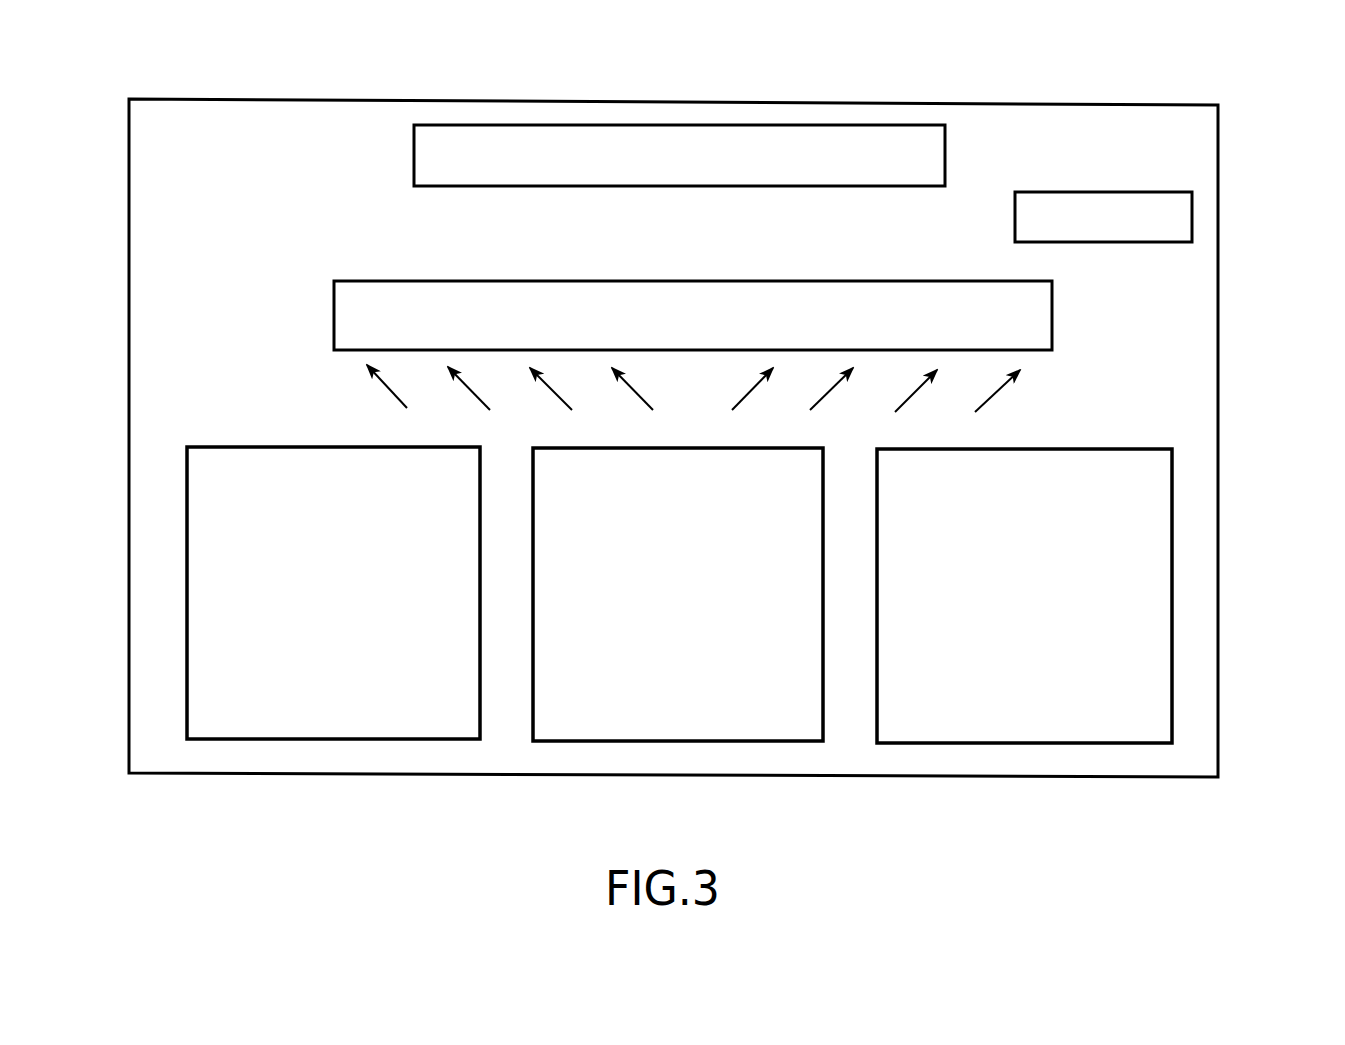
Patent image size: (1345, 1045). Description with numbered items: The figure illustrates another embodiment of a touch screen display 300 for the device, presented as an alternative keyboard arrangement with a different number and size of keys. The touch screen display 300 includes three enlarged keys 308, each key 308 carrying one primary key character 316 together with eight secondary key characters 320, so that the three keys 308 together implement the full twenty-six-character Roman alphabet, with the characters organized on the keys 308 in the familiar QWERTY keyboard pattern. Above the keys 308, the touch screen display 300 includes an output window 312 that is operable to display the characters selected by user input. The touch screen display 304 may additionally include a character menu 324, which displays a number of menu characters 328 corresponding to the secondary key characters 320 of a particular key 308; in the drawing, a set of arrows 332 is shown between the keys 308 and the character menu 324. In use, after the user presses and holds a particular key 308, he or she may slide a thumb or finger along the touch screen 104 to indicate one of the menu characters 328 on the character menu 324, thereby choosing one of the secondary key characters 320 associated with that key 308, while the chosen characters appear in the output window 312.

The touch screen display 300 is at (138, 72).
The touch screen 104 is at (1192, 147).
The output window 312 is at (863, 163).
The touch screen display 304 is at (1168, 222).
The character menu 324 is at (1028, 325).
The menu characters 328 is at (568, 297).
The arrows indicating mapping 332 is at (470, 405).
The enlarged keys 308 is at (565, 715).
The secondary key characters 320 is at (1137, 692).
The primary key character 316 is at (1023, 627).